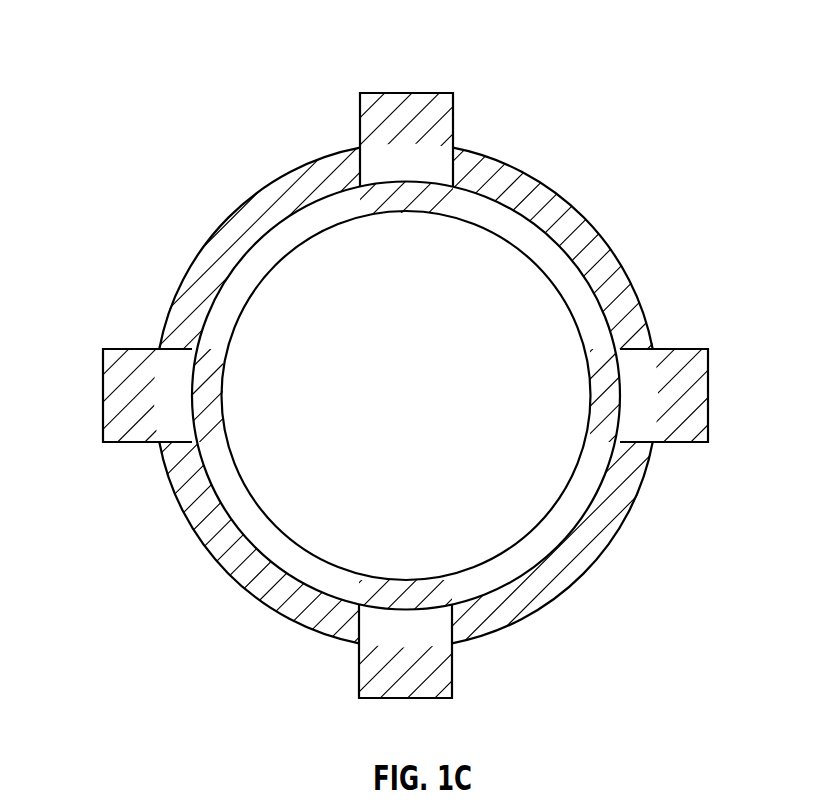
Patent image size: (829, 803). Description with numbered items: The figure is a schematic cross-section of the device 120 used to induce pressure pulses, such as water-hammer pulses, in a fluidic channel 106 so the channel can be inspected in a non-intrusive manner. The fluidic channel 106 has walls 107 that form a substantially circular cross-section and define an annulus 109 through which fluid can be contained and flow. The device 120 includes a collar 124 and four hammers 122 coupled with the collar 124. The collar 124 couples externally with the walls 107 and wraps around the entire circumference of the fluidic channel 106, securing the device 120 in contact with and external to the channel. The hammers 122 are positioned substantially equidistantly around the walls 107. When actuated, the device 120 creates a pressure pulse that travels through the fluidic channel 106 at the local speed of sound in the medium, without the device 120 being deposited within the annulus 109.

The device 120 is at (143, 110).
The hammers 122 is at (415, 102).
The collar 124 is at (587, 217).
The walls 107 is at (570, 517).
The fluidic channel 106 is at (508, 570).
The annulus 109 is at (424, 403).